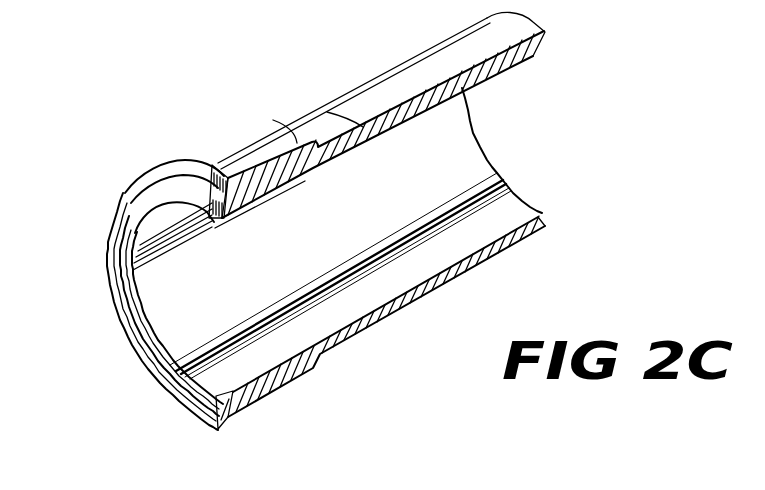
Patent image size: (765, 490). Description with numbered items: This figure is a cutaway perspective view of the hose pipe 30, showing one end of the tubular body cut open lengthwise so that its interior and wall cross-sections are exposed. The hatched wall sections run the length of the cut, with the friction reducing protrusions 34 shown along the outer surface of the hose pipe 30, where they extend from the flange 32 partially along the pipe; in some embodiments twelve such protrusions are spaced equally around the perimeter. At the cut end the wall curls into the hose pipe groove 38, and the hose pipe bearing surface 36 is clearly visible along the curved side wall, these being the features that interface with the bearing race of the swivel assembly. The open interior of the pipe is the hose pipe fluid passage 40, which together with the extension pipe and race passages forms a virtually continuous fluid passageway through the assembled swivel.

The hose pipe 30 is at (42, 167).
The flange 32 is at (227, 431).
The friction reducing protrusions 34 is at (293, 147).
The hose pipe bearing surface 36 is at (110, 236).
The hose pipe groove 38 is at (140, 203).
The hose pipe fluid passage 40 is at (456, 152).